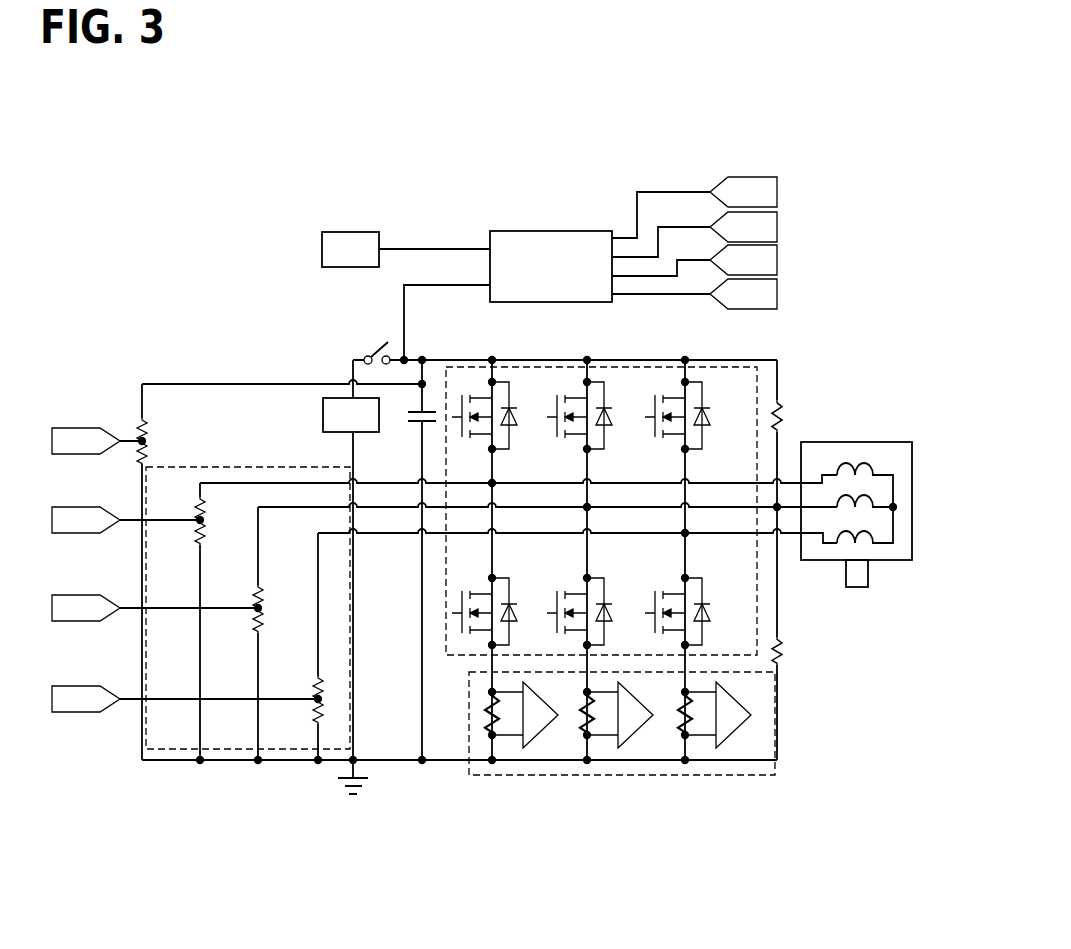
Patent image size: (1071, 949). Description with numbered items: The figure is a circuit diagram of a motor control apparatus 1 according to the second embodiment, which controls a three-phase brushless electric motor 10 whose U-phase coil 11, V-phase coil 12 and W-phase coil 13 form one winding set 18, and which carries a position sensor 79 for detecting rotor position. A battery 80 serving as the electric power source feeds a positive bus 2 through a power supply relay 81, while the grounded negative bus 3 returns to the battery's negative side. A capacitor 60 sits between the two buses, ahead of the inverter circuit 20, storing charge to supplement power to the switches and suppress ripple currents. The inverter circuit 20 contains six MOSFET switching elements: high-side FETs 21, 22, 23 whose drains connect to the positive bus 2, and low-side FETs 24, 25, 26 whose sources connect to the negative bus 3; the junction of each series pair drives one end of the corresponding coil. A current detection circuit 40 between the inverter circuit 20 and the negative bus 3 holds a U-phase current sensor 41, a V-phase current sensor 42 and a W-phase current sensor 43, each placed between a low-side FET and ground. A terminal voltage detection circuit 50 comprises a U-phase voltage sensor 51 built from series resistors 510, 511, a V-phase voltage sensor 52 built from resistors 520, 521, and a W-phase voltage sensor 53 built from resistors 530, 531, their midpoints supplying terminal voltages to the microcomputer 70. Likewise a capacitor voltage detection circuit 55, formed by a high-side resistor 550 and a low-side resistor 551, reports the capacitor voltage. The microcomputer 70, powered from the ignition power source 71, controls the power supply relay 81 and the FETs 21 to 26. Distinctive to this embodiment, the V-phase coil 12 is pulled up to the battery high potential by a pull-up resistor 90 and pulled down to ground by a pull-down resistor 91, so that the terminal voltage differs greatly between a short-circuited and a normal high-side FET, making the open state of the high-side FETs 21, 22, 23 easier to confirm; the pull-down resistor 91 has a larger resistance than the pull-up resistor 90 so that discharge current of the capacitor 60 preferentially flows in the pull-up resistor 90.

The motor control apparatus 1 is at (462, 191).
The positive bus 2 is at (452, 360).
The negative bus 3 is at (405, 762).
The electric motor 10 is at (845, 442).
The U-phase coil 11 is at (855, 468).
The V-phase coil 12 is at (855, 504).
The W-phase coil 13 is at (855, 539).
The winding set 18 is at (835, 557).
The inverter circuit 20 is at (640, 367).
The U-phase high-side FET 21 is at (512, 388).
The V-phase high-side FET 22 is at (606, 388).
The W-phase high-side FET 23 is at (704, 388).
The U-phase low-side FET 24 is at (512, 584).
The V-phase low-side FET 25 is at (606, 584).
The W-phase low-side FET 26 is at (704, 584).
The current detection circuit 40 is at (640, 775).
The U-phase current sensor 41 is at (546, 692).
The V-phase current sensor 42 is at (640, 692).
The W-phase current sensor 43 is at (738, 692).
The terminal voltage detection circuit 50 is at (226, 752).
The U-phase voltage sensor 51 is at (201, 616).
The V-phase voltage sensor 52 is at (260, 633).
The W-phase voltage sensor 53 is at (308, 646).
The capacitor voltage detection circuit 55 is at (256, 569).
The capacitor 60 is at (415, 425).
The microcomputer 70 is at (544, 231).
The ignition electric power source 71 is at (322, 250).
The position sensor 79 is at (853, 589).
The battery 80 is at (322, 418).
The power supply relay 81 is at (363, 355).
The pull-up resistor 90 is at (788, 415).
The pull-down resistor 91 is at (788, 649).
The U-phase high-side resistor 510 is at (198, 500).
The U-phase low-side resistor 511 is at (225, 515).
The V-phase high-side resistor 520 is at (258, 590).
The V-phase low-side resistor 521 is at (283, 603).
The W-phase high-side resistor 530 is at (318, 678).
The W-phase low-side resistor 531 is at (318, 712).
The high-side resistor 550 is at (138, 417).
The low-side resistor 551 is at (162, 437).